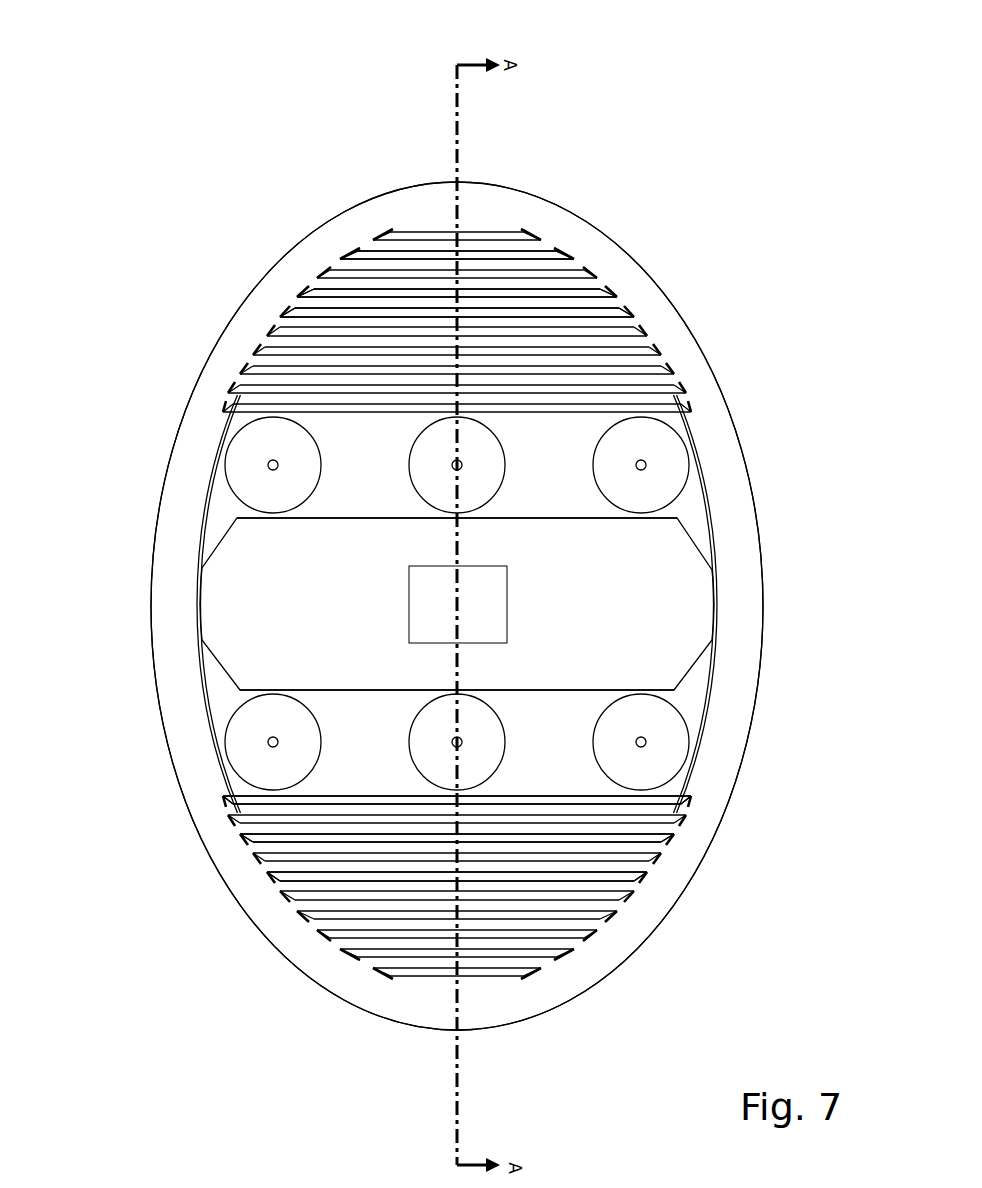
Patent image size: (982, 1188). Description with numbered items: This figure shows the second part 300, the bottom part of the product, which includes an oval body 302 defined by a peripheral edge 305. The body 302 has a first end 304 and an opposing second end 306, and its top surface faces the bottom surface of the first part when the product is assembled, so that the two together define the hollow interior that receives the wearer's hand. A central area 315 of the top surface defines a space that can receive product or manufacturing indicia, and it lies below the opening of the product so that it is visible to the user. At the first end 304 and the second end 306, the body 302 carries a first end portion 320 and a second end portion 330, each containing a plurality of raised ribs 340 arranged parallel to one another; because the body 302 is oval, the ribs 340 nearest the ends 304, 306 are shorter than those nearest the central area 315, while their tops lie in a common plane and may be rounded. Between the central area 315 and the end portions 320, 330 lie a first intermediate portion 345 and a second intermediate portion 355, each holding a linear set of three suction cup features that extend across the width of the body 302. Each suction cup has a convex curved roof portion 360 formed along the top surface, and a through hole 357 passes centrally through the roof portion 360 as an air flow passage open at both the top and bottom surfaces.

The second part 300 is at (562, 131).
The body 302 is at (545, 748).
The first end 304 is at (398, 190).
The peripheral edge 305 is at (380, 1000).
The second end 306 is at (465, 1030).
The central area 315 is at (589, 615).
The first end portion 320 is at (262, 377).
The second end portion 330 is at (600, 886).
The raised ribs 340 is at (290, 313).
The first intermediate portion 345 is at (537, 457).
The second intermediate portion 355 is at (337, 756).
The through hole 357 is at (645, 460).
The curved roof portion 360 is at (410, 465).